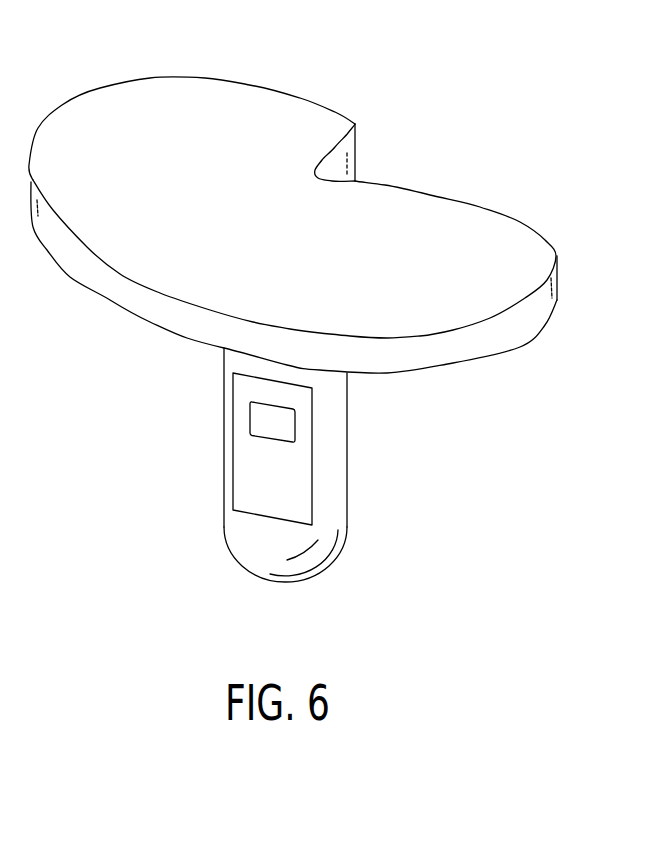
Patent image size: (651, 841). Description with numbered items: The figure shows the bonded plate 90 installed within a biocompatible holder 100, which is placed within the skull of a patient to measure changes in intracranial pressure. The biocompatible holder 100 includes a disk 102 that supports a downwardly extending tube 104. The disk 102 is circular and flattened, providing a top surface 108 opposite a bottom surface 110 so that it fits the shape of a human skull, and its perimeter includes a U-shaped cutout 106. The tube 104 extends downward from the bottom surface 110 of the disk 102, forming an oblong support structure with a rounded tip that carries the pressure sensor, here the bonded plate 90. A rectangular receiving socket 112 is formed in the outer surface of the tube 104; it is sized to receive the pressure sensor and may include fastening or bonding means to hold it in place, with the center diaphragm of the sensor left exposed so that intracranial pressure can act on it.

The biocompatible holder 100 is at (310, 300).
The disk 102 is at (310, 238).
The tube 104 is at (263, 465).
The U-shaped cutout 106 is at (372, 151).
The top surface 108 is at (287, 225).
The bottom surface 110 is at (445, 372).
The rectangular receiving socket 112 is at (316, 449).
The bonded plate 90 is at (300, 490).